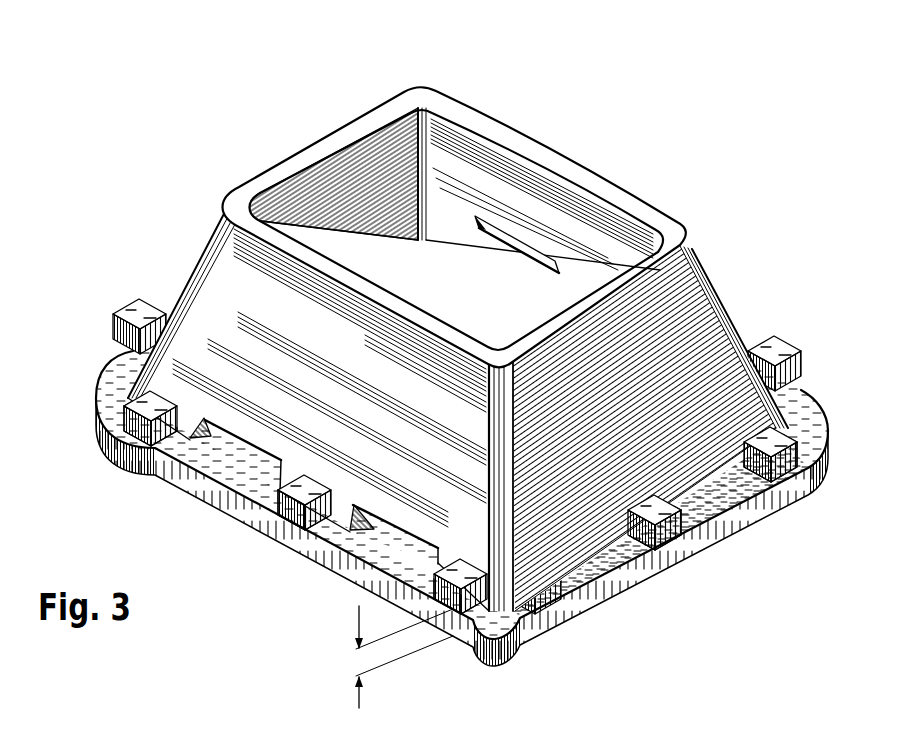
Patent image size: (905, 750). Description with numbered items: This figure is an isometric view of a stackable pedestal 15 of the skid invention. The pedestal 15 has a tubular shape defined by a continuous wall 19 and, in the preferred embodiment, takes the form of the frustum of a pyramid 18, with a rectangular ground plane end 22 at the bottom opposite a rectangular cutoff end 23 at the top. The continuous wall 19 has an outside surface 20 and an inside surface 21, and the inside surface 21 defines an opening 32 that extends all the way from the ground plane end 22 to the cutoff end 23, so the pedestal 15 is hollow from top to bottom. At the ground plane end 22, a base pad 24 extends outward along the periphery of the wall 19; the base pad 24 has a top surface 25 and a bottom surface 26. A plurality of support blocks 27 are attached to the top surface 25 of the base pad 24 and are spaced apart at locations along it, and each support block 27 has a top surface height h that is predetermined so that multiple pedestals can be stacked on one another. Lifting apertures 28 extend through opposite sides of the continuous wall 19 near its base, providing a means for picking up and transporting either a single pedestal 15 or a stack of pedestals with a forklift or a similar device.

The pedestal 15 is at (606, 153).
The pyramid 18 is at (230, 288).
The continuous wall 19 is at (450, 97).
The outside surface 20 is at (683, 303).
The inside surface 21 is at (343, 223).
The ground plane end 22 is at (565, 633).
The cutoff end 23 is at (500, 107).
The base pad 24 is at (322, 552).
The top surface 25 is at (320, 536).
The bottom surface 26 is at (335, 577).
The support blocks 27 is at (122, 392).
The lifting apertures 28 is at (250, 450).
The opening 32 is at (407, 232).
The top surface height h is at (398, 657).